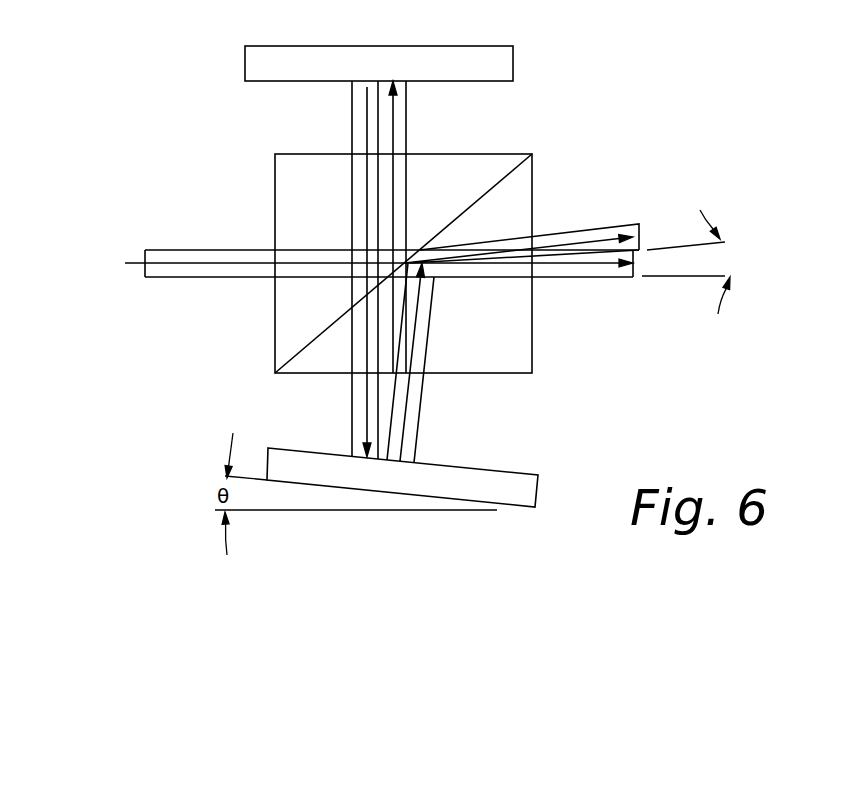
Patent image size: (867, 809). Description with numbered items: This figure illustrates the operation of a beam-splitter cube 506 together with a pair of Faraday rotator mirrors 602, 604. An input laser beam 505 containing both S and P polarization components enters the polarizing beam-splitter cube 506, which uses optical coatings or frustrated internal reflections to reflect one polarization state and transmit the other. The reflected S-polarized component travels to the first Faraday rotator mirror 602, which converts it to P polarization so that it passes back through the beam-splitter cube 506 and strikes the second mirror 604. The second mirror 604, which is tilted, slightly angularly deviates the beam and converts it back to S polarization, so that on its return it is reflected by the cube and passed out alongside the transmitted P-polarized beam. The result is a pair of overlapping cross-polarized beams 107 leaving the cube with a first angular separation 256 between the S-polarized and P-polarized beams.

The Faraday rotator mirror 602 is at (269, 82).
The second mirror 604 is at (490, 470).
The beam-splitter cube 506 is at (533, 187).
The input laser beam 505 is at (206, 250).
The pair of overlapping cross-polarized beams 107 is at (618, 211).
The first angular separation 256 is at (734, 247).